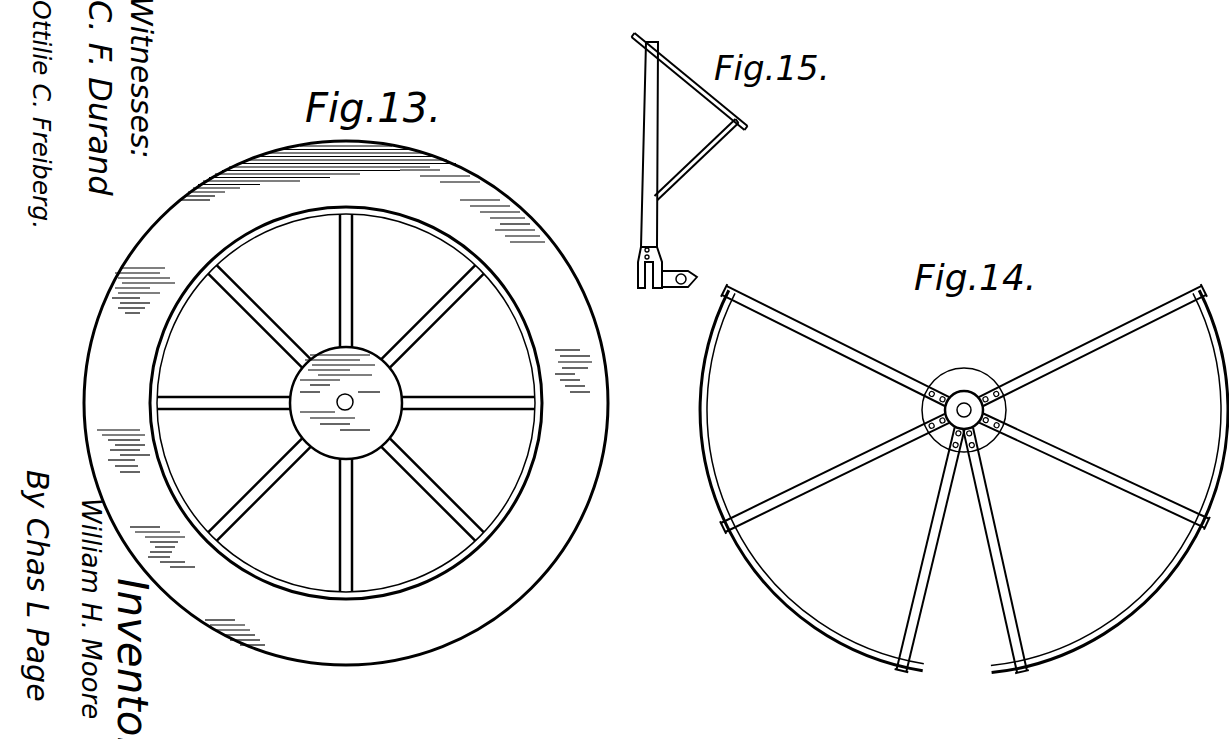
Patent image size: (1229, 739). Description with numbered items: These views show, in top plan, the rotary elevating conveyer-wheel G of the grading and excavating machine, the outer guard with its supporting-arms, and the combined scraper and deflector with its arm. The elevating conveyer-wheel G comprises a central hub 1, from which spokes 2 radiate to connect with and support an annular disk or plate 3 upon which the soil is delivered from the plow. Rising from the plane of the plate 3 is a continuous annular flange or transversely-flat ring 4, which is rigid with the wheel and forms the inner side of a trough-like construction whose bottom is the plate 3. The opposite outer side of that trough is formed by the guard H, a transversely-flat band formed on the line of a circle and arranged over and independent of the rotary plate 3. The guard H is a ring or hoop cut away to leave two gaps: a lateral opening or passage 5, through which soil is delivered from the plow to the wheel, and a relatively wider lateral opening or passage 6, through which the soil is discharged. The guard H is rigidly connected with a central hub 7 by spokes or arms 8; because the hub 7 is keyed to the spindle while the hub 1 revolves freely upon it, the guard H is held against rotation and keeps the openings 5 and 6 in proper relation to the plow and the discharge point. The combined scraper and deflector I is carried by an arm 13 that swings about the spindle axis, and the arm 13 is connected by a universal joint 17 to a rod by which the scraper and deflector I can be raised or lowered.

In FIG. 13, the central hub 1 is at (346, 403).
In FIG. 13, the spokes 2 is at (392, 343).
In FIG. 13, the annular disk or plate 3 is at (346, 403).
In FIG. 13, the continuous annular flange or transversely-flat ring 4 is at (535, 445).
In FIG. 14, the lateral opening or passage 5 is at (1089, 490).
In FIG. 13, the lateral opening or passage 6 is at (344, 395).
In FIG. 14, the lateral opening or passage 6 is at (812, 454).
In FIG. 14, the central hub 7 is at (980, 386).
In FIG. 14, the spokes or arms 8 is at (866, 366).
In FIG. 15, the arm 13 is at (646, 133).
In FIG. 15, the universal joint 17 is at (680, 278).
In FIG. 13, the rotary elevating conveyer-wheel G is at (395, 647).
In FIG. 14, the guard H is at (760, 404).
In FIG. 15, the combined scraper and deflector I is at (678, 79).